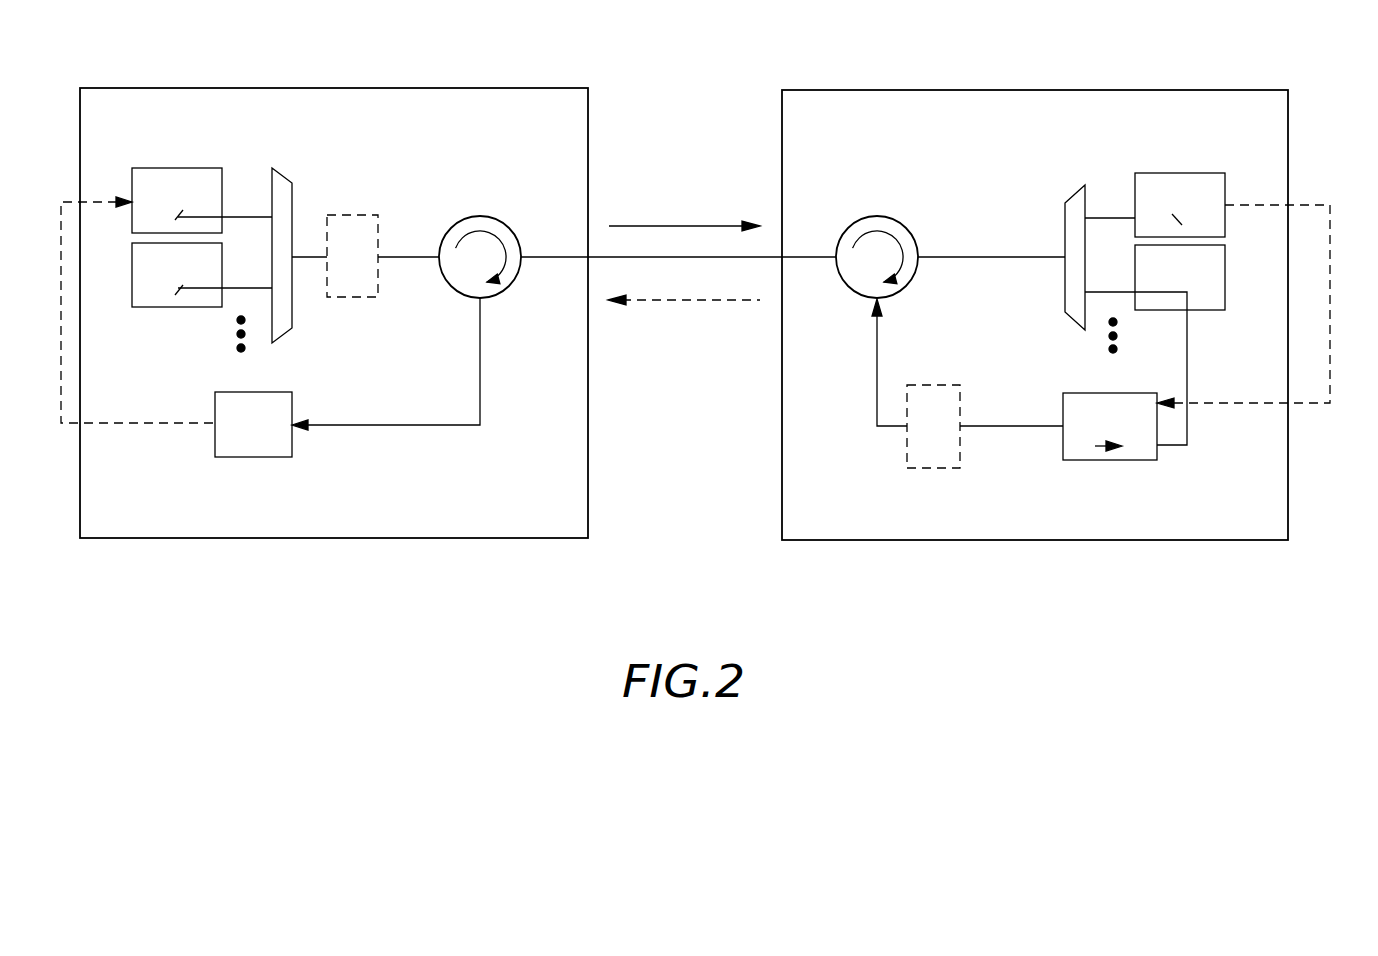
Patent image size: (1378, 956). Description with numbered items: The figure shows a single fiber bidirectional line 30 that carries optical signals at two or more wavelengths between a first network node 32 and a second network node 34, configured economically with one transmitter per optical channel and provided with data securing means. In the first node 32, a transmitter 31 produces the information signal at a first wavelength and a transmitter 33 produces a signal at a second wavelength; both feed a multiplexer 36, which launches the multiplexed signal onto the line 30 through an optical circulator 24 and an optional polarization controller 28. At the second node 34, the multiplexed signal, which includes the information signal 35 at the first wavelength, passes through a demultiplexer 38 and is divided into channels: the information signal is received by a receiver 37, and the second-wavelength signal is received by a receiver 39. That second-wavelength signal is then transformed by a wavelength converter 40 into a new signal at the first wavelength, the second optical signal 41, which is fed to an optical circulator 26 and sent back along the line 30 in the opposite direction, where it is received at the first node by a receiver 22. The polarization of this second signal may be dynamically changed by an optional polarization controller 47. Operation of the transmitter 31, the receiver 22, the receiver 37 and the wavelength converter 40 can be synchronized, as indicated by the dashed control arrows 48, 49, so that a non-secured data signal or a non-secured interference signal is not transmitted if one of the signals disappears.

The receiver 22 is at (255, 392).
The optical circulator 24 is at (482, 216).
The optical circulator 26 is at (880, 216).
The polarization controller 28 is at (351, 215).
The single fiber bidirectional line 30 is at (652, 122).
The transmitter 31 is at (176, 168).
The network node 32 is at (552, 88).
The transmitter 33 is at (198, 310).
The network node 34 is at (1250, 90).
The information signal 35 is at (682, 226).
The multiplexer 36 is at (282, 175).
The receiver 37 is at (1180, 173).
The demultiplexer 38 is at (1072, 195).
The receiver 39 is at (1198, 312).
The wavelength converter 40 is at (1110, 393).
The second optical signal 41 is at (682, 300).
The polarization controller 47 is at (934, 385).
The control arrow 48 is at (1330, 305).
The control arrow 49 is at (61, 312).